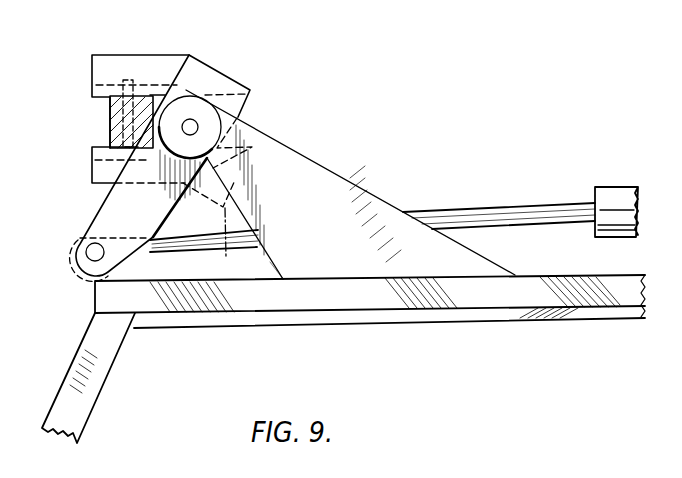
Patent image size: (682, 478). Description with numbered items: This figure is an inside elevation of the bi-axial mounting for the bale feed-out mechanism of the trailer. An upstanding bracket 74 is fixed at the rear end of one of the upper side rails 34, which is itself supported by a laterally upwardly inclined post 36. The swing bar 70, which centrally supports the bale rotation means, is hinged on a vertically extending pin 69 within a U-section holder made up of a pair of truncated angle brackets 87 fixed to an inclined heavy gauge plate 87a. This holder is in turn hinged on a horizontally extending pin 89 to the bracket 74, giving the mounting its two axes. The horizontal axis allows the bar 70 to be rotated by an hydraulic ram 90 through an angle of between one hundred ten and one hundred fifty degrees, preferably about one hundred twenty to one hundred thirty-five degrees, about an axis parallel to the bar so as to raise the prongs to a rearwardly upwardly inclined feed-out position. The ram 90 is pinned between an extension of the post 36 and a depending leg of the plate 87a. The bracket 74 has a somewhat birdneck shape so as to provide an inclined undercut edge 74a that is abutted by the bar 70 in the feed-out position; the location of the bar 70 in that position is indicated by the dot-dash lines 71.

The upper side rail 34 is at (416, 302).
The post 36 is at (93, 396).
The pin 69 is at (108, 110).
The swing bar 70 is at (112, 133).
The dot-dash lines 71 is at (202, 199).
The bracket 74 is at (343, 192).
The undercut edge 74a is at (270, 262).
The truncated angle bracket 87 is at (152, 72).
The inclined heavy gauge plate 87a is at (118, 210).
The pin 89 is at (190, 127).
The hydraulic ram 90 is at (617, 181).